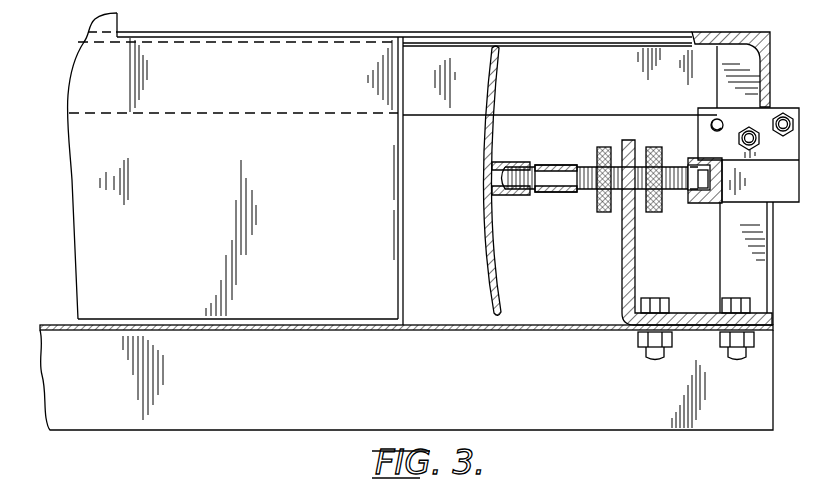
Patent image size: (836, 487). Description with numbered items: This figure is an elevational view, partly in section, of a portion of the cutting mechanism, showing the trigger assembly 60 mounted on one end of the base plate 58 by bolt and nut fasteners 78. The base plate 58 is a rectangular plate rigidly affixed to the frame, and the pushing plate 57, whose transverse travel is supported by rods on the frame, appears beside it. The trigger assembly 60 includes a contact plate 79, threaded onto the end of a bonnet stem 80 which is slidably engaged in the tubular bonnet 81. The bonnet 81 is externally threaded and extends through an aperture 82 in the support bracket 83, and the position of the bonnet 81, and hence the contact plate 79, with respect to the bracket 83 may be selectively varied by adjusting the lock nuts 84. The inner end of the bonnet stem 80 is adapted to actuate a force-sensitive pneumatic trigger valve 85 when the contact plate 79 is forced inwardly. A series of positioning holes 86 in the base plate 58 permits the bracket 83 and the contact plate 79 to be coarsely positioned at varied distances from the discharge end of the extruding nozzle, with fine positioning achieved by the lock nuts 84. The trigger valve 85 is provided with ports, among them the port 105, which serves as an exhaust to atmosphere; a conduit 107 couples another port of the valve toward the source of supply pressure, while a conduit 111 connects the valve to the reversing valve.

The pushing plate 57 is at (80, 193).
The base plate 58 is at (48, 322).
The trigger assembly 60 is at (575, 208).
The bolt and nut fasteners 78 is at (733, 299).
The contact plate 79 is at (490, 268).
The bonnet stem 80 is at (552, 173).
The tubular bonnet 81 is at (580, 170).
The aperture 82 is at (636, 173).
The support bracket 83 is at (623, 263).
The lock nuts 84 is at (650, 213).
The pneumatic trigger valve 85 is at (783, 203).
The positioning holes 86 is at (333, 328).
The port 105 is at (713, 125).
The conduit 107 is at (787, 115).
The conduit 111 is at (748, 130).